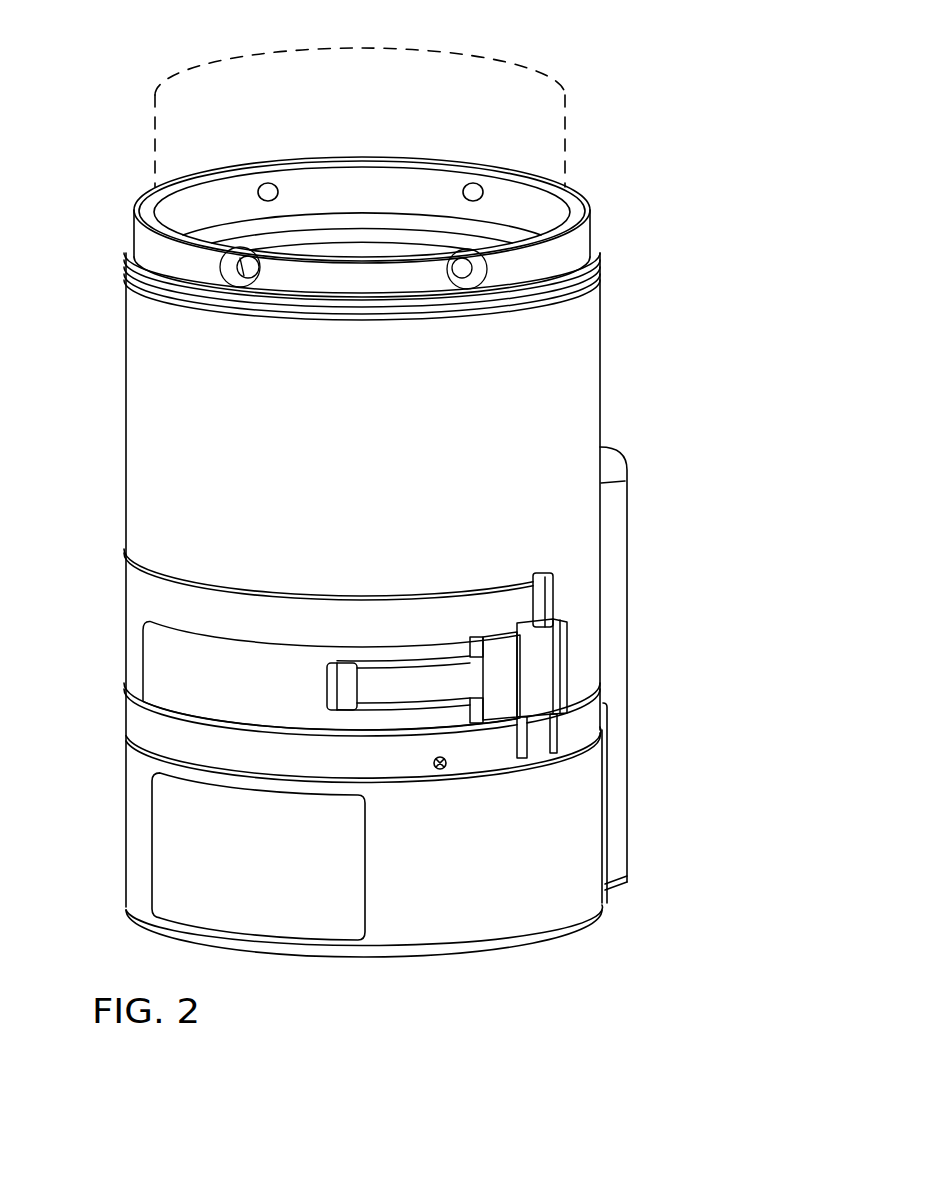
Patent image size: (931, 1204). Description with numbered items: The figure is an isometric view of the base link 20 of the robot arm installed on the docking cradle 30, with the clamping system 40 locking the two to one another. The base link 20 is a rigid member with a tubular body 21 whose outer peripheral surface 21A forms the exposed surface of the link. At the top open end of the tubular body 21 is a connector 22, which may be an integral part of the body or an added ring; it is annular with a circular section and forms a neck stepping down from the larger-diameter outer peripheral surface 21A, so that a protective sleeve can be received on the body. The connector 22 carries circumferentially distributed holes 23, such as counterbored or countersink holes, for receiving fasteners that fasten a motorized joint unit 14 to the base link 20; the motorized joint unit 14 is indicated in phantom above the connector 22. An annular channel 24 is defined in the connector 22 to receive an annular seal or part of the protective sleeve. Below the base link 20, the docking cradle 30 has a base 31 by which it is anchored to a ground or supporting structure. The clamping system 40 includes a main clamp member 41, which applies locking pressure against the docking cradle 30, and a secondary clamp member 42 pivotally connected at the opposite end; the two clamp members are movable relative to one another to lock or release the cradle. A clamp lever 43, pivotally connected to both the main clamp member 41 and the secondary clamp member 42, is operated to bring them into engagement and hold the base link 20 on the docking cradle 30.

The motorized joint unit 14 is at (567, 112).
The base link 20 is at (404, 532).
The tubular body 21 is at (397, 579).
The outer peripheral surface 21A is at (437, 447).
The connector 22 is at (600, 237).
The holes 23 is at (238, 287).
The annular channel 24 is at (136, 258).
The docking cradle 30 is at (469, 702).
The base 31 is at (470, 891).
The clamping system 40 is at (364, 659).
The main clamp member 41 is at (138, 583).
The secondary clamp member 42 is at (533, 676).
The clamp lever 43 is at (267, 698).